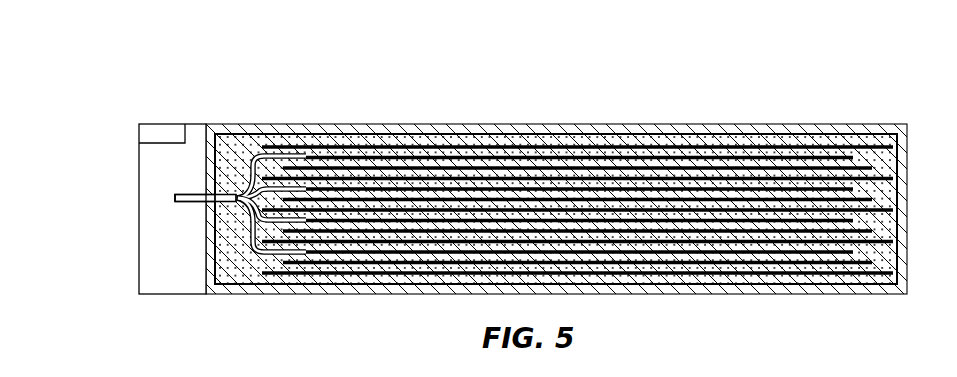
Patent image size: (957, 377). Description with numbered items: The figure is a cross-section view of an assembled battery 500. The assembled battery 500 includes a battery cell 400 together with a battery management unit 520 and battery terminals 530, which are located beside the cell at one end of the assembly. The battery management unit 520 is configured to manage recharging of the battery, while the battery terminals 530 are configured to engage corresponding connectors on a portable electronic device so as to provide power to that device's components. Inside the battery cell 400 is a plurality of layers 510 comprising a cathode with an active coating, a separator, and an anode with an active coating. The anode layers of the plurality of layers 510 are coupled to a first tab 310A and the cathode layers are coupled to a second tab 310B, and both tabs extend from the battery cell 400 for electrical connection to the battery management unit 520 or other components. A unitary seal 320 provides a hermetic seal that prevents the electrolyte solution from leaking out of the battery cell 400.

The assembled battery 500 is at (141, 33).
The battery cell 400 is at (340, 125).
The plurality of layers 510 is at (812, 146).
The battery management unit 520 is at (139, 220).
The battery terminals 530 is at (168, 125).
The first tab 310A is at (190, 195).
The second tab 310B is at (190, 195).
The unitary seal 320 is at (201, 202).